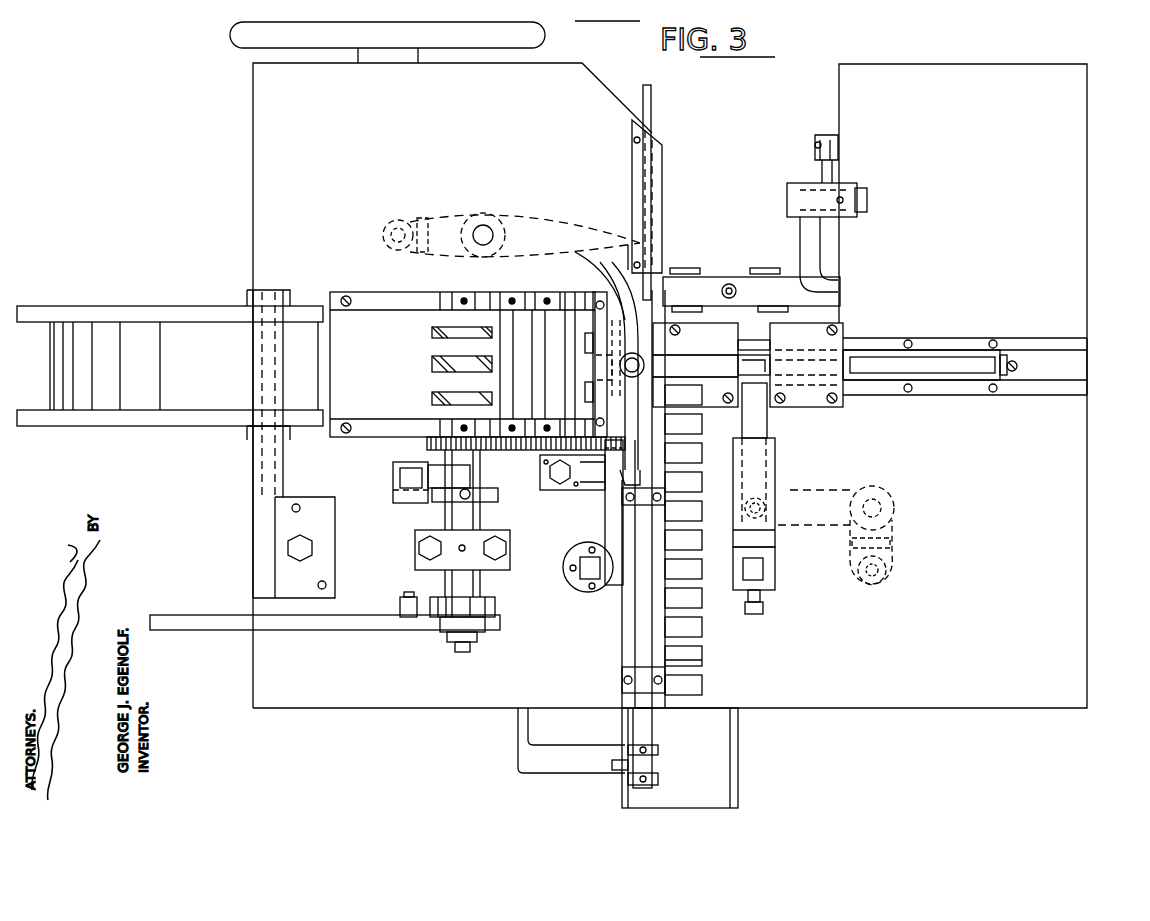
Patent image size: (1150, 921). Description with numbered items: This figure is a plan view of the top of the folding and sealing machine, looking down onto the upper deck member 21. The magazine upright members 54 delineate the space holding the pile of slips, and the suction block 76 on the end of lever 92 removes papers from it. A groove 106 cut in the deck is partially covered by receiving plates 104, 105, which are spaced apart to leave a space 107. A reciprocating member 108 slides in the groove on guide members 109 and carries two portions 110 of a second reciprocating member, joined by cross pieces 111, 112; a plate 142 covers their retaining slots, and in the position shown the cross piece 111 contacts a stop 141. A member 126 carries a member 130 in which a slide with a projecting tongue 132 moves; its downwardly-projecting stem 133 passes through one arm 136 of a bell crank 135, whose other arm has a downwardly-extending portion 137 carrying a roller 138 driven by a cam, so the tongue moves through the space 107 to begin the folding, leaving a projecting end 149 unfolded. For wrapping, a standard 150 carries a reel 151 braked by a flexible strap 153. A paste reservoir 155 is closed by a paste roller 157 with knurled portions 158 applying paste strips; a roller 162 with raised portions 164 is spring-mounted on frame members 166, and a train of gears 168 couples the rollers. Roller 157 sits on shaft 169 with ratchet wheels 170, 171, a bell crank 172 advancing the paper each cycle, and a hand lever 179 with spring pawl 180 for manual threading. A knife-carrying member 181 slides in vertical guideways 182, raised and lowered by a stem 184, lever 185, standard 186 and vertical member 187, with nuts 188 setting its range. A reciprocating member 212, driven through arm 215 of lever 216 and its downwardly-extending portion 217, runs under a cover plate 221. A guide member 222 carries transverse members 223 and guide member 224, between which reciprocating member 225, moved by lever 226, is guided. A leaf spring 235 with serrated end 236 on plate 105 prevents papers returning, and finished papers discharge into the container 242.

The upper deck member 21 is at (325, 708).
The upright members 54 is at (690, 266).
The suction block 76 is at (730, 282).
The lever 92 is at (825, 250).
The receiving plate 104 is at (815, 405).
The receiving plate 105 is at (712, 405).
The groove 106 is at (1043, 375).
The space 107 is at (755, 336).
The reciprocating member 108 is at (953, 382).
The guide members 109 is at (1087, 346).
The portions of second reciprocating member 110 is at (920, 375).
The cross piece 111 is at (1008, 378).
The cross piece 112 is at (758, 410).
The member 126 is at (760, 575).
The member 130 is at (764, 592).
The projecting tongue 132 is at (768, 415).
The downwardly-projecting stem 133 is at (760, 505).
The bell crank 135 is at (895, 508).
The arm of bell crank 136 is at (806, 530).
The downwardly-extending portion 137 is at (890, 545).
The roller 138 is at (885, 578).
The stop 141 is at (1018, 361).
The plate 142 is at (843, 323).
The projecting end 149 is at (703, 630).
The standard 150 is at (255, 490).
The reel 151 is at (136, 418).
The flexible strap 153 is at (52, 357).
The paste reservoir 155 is at (462, 364).
The paste roller 157 is at (432, 343).
The knurled portions 158 is at (432, 398).
The roller 162 is at (588, 368).
The raised portions 164 is at (585, 343).
The frame members 166 is at (570, 292).
The train of gears 168 is at (542, 480).
The shaft 169 is at (482, 453).
The ratchet wheel 170 is at (492, 475).
The ratchet wheel 171 is at (495, 607).
The bell crank 172 is at (498, 498).
The hand lever 179 is at (284, 630).
The spring pawl 180 is at (413, 615).
The member 181 is at (595, 275).
The vertical guideways 182 is at (619, 249).
The stem 184 is at (618, 300).
The lever 185 is at (608, 524).
The standard 186 is at (592, 484).
The vertical member 187 is at (584, 580).
The nuts 188 is at (641, 380).
The reciprocating member 212 is at (652, 108).
The arm 215 is at (575, 220).
The lever 216 is at (490, 258).
The downwardly-extending portion 217 is at (423, 218).
The cover plate 221 is at (632, 158).
The guide member 222 is at (620, 638).
The transverse members 223 is at (640, 500).
The guide member 224 is at (668, 658).
The reciprocating member 225 is at (633, 720).
The lever 226 is at (554, 773).
The leaf spring 235 is at (695, 366).
The serrated end 236 is at (654, 366).
The container 242 is at (738, 782).